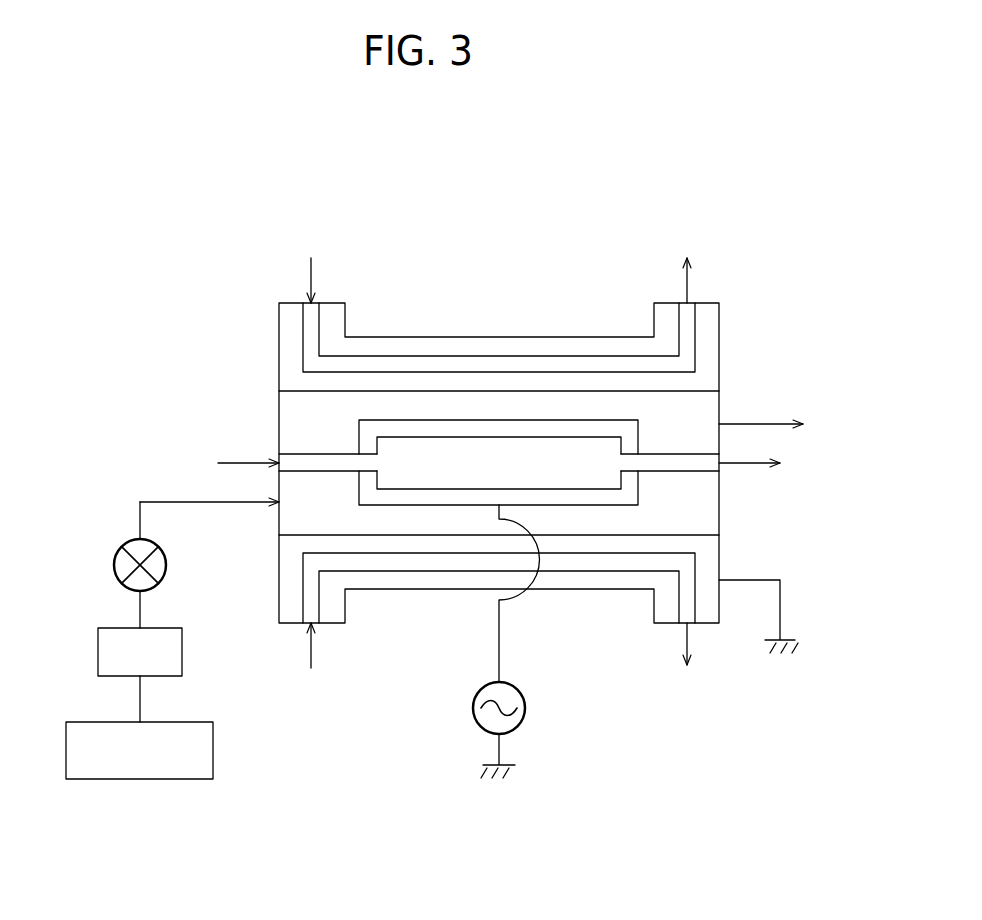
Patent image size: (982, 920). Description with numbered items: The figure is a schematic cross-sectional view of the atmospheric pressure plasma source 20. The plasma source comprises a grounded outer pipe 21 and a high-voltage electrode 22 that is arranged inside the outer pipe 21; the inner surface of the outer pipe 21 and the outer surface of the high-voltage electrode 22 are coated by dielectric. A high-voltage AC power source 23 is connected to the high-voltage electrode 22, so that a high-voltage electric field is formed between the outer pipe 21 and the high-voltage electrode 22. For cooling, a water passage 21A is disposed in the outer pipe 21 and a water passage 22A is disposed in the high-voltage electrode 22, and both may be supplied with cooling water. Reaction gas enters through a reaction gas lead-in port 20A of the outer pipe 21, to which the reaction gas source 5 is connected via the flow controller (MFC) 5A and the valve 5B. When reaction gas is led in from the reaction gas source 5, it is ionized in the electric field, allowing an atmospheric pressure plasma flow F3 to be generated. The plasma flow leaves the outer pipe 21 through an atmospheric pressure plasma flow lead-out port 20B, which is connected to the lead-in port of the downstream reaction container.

The reaction gas source 5 is at (145, 779).
The flow controller (MFC) 5A is at (98, 654).
The valve 5B is at (112, 568).
The atmospheric pressure plasma source 20 is at (746, 254).
The reaction gas lead-in port 20A is at (278, 524).
The atmospheric pressure plasma flow lead-out port 20B is at (722, 493).
The outer pipe 21 is at (722, 604).
The water passage 21A is at (431, 366).
The high-voltage electrode 22 is at (509, 420).
The water passage 22A is at (420, 468).
The high-voltage AC power source 23 is at (526, 706).
The atmospheric pressure plasma flow F3 is at (777, 424).